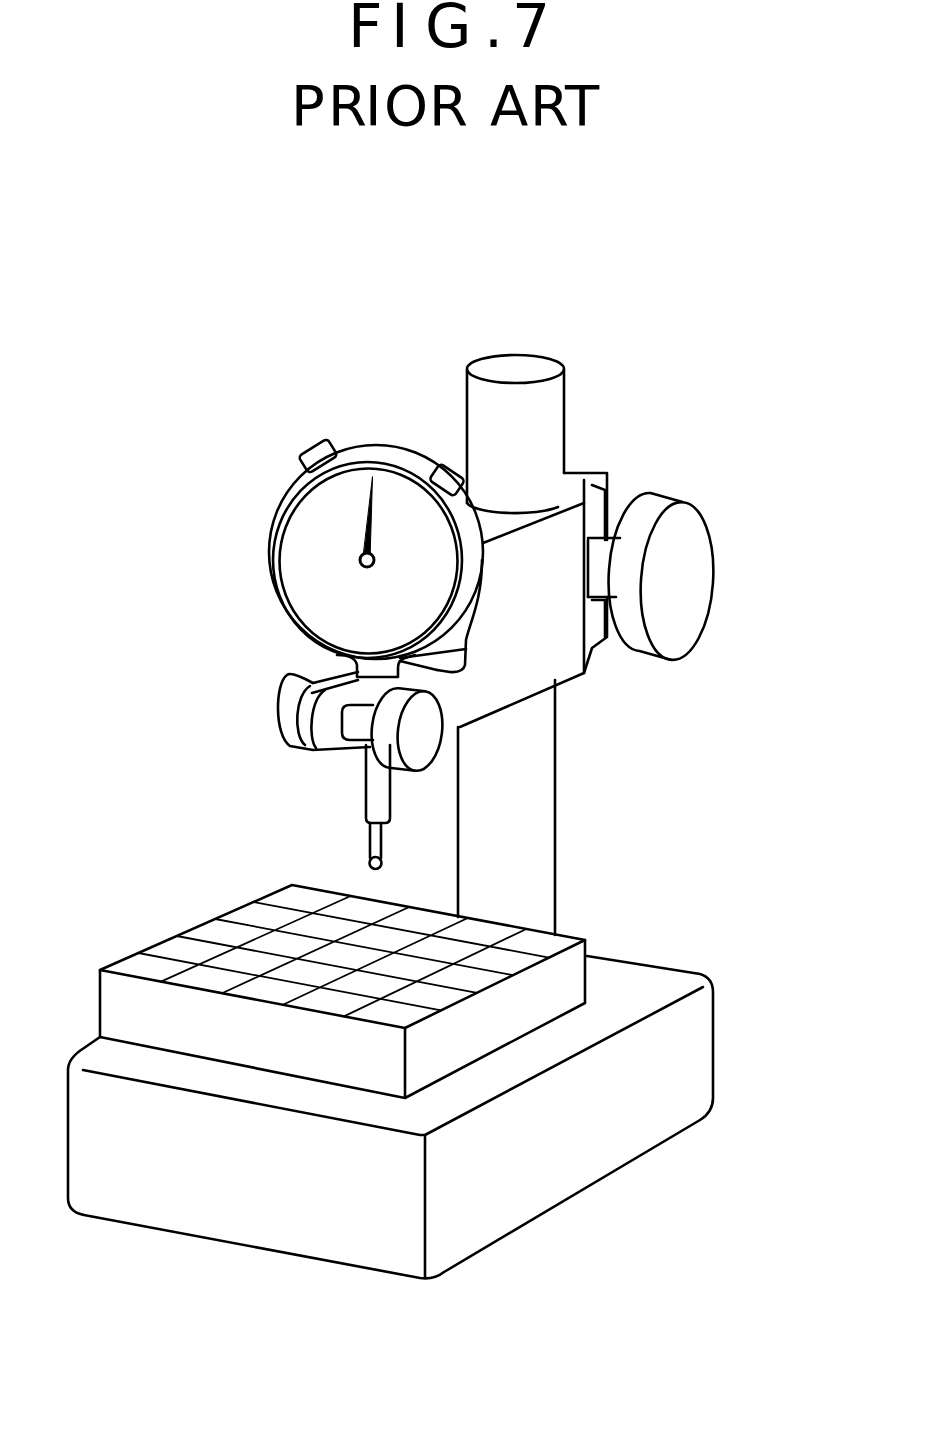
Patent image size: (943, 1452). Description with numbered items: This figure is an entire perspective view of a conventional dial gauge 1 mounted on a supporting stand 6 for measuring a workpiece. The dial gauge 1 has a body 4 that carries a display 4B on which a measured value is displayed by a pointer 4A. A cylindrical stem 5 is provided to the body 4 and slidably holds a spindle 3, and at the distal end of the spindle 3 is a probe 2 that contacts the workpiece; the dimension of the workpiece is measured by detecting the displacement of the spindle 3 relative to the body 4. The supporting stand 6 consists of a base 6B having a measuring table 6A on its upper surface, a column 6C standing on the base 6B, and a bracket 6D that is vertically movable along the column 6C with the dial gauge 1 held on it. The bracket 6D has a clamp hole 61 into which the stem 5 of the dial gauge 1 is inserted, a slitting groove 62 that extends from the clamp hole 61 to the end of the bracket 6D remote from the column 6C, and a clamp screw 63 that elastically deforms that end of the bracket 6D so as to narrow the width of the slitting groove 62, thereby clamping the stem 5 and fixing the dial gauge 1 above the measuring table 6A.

The dial gauge 1 is at (263, 496).
The probe 2 is at (382, 864).
The spindle 3 is at (369, 849).
The body 4 is at (268, 547).
The pointer 4A is at (367, 523).
The display 4B is at (300, 583).
The stem 5 is at (365, 800).
The supporting stand 6 is at (667, 421).
The measuring table 6A is at (167, 938).
The base 6B is at (588, 1188).
The column 6C is at (558, 839).
The bracket 6D is at (572, 674).
The clamp hole 61 is at (437, 670).
The slitting groove 62 is at (287, 676).
The clamp screw 63 is at (360, 741).